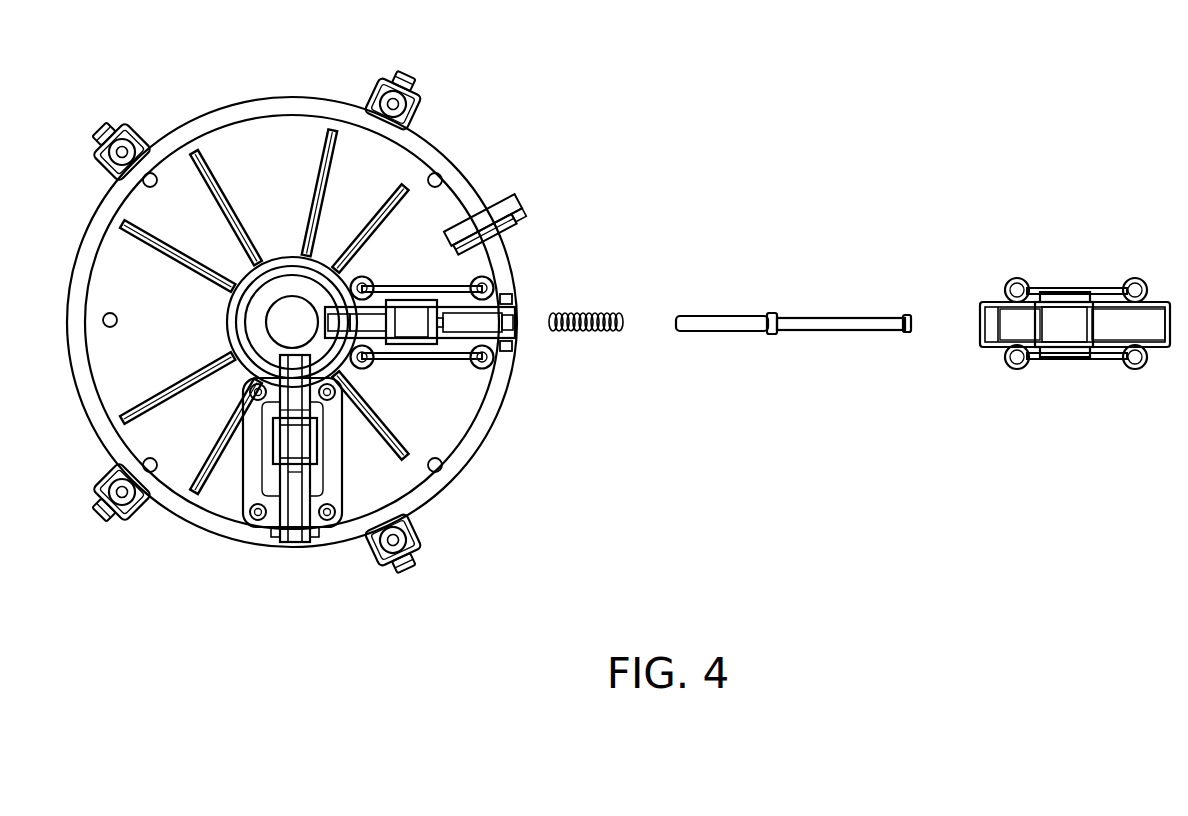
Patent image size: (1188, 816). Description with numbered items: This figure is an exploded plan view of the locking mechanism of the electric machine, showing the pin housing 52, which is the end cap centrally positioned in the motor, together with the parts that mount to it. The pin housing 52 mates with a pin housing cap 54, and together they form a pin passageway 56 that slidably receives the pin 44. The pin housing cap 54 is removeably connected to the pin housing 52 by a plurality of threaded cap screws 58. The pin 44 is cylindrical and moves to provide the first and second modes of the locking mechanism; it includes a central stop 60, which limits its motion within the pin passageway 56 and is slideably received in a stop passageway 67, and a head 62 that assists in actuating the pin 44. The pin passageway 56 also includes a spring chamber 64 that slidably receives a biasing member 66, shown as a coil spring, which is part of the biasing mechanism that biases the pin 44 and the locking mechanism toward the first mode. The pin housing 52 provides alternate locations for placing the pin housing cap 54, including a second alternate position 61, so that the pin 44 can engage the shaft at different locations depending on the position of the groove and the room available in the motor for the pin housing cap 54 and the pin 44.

The pin 44 is at (790, 297).
The pin housing 52 is at (420, 225).
The pin housing cap 54 is at (1135, 122).
The pin passageway 56 is at (297, 505).
The threaded cap screws 58 is at (1138, 283).
The central stop 60 is at (772, 336).
The second alternate position 61 is at (545, 283).
The head 62 is at (904, 336).
The spring chamber 64 is at (246, 400).
The biasing member 66 is at (580, 334).
The stop passageway 67 is at (273, 448).